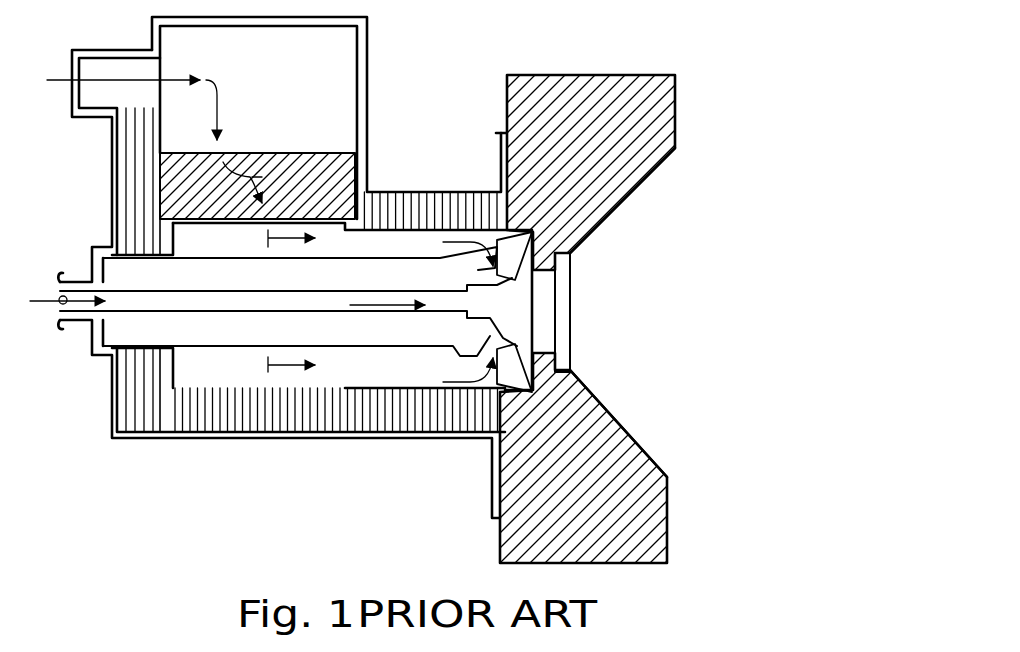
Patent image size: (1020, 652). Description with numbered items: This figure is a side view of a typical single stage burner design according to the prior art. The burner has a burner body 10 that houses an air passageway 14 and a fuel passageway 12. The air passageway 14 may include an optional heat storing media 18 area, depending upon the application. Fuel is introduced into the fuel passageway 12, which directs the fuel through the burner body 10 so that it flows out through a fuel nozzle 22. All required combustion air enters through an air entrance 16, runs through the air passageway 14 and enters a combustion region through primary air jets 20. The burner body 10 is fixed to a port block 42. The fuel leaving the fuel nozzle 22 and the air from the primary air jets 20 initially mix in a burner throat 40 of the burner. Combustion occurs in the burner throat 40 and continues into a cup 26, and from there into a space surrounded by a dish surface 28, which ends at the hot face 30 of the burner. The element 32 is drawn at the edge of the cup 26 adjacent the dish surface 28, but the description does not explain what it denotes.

The burner body 10 is at (272, 440).
The fuel passageway 12 is at (250, 305).
The air passageway 14 is at (333, 68).
The air entrance 16 is at (72, 110).
The heat storing media 18 is at (337, 170).
The primary air jets 20 is at (522, 217).
The fuel nozzle 22 is at (447, 312).
The cup 26 is at (545, 280).
The dish surface 28 is at (633, 193).
The hot face 30 is at (677, 92).
The edge bar 32 is at (540, 258).
The burner throat 40 is at (523, 319).
The port block 42 is at (583, 135).